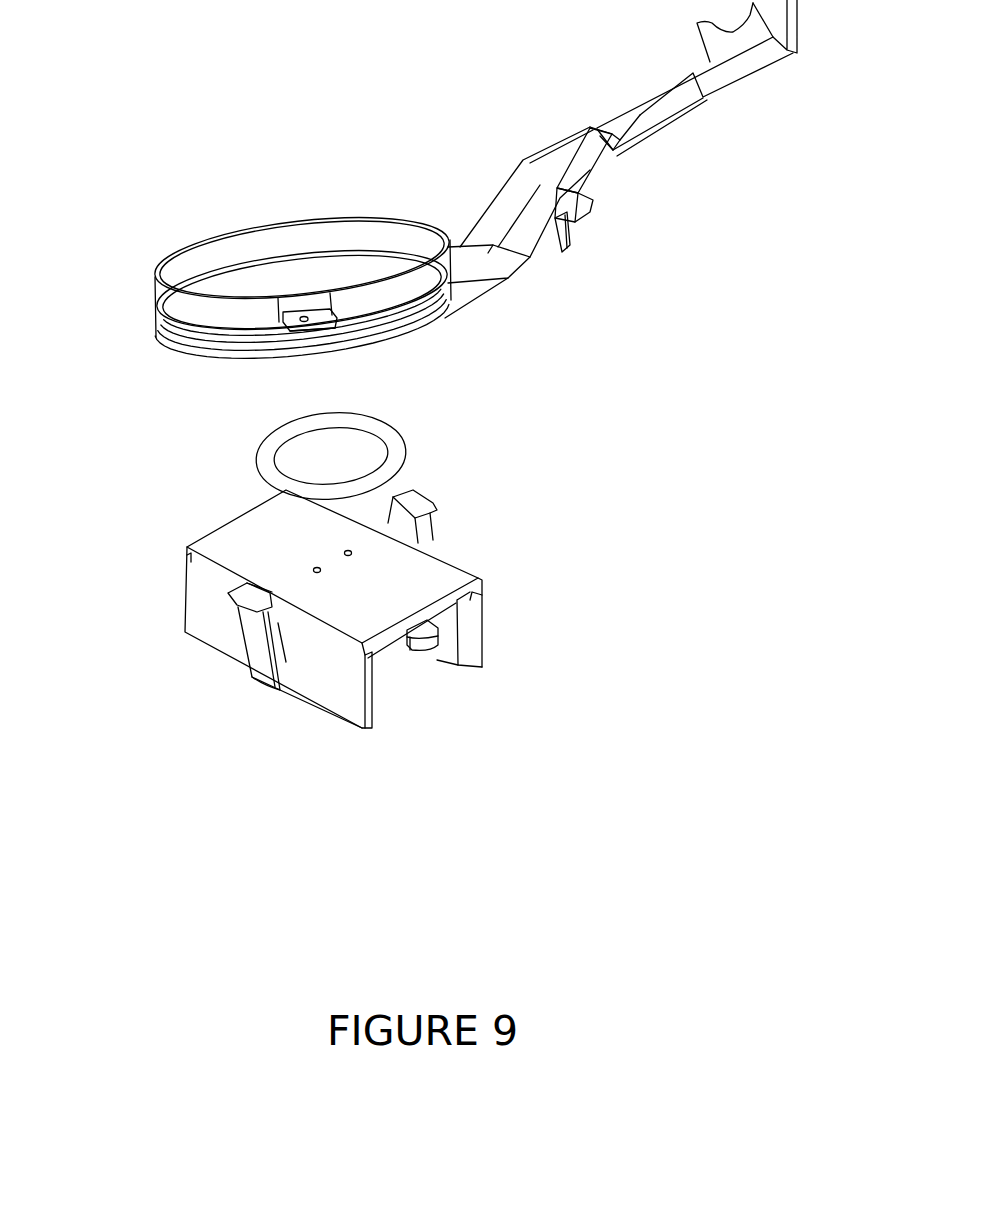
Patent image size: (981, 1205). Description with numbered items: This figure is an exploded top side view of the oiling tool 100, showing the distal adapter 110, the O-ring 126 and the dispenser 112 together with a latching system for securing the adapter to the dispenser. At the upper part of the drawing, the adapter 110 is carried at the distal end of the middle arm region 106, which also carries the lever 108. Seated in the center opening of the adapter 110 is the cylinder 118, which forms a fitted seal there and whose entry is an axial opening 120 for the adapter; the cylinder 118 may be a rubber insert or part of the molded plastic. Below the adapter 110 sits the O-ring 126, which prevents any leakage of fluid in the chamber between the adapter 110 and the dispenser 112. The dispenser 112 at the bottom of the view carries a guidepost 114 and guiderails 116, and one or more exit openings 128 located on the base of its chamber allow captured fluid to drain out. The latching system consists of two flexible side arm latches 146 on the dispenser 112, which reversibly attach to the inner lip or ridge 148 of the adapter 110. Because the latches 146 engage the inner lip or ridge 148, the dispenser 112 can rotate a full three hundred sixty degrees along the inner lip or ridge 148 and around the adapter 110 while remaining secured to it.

The oiling tool 100 is at (122, 93).
The middle arm region 106 is at (497, 178).
The lever 108 is at (602, 227).
The distal adapter 110 is at (152, 288).
The dispenser 112 is at (236, 715).
The guidepost 114 is at (433, 660).
The guiderails 116 is at (355, 736).
The cylinder 118 is at (322, 311).
The axial opening 120 is at (312, 329).
The O-ring 126 is at (256, 457).
The exit openings 128 is at (342, 549).
The flexible side arm latches 146 is at (225, 610).
The inner lip or ridge 148 is at (175, 348).